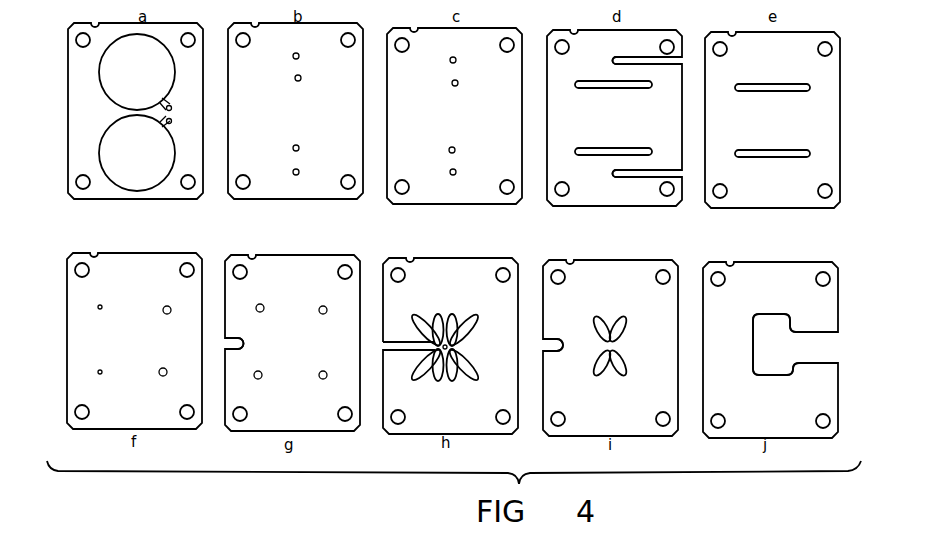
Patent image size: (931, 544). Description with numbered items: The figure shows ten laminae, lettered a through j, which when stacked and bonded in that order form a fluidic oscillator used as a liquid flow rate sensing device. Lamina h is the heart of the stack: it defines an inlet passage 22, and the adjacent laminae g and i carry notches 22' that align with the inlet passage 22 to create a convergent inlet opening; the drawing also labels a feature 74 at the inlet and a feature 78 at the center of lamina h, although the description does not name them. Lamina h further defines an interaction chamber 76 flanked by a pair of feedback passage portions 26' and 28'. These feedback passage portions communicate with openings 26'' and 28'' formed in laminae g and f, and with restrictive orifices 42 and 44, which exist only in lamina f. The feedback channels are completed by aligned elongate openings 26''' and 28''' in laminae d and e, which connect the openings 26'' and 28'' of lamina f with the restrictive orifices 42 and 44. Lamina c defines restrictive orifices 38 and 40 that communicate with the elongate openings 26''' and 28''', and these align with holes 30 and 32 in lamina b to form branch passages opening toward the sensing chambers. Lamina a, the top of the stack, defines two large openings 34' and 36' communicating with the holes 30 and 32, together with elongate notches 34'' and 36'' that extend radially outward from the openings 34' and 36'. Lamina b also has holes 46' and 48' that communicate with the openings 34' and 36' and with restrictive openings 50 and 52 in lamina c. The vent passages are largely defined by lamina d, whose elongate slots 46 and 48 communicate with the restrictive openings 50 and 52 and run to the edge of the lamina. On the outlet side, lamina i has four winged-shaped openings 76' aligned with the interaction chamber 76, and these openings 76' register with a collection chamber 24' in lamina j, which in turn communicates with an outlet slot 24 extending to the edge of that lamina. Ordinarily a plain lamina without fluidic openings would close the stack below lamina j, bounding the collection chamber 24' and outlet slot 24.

The large opening 34' is at (137, 72).
The elongate notch 34'' is at (185, 56).
The large opening 36' is at (137, 153).
The elongate notch 36'' is at (187, 170).
The hole 46' is at (279, 69).
The hole 30 is at (301, 80).
The hole 32 is at (293, 149).
The hole 48' is at (315, 162).
The restrictive opening 50 is at (450, 61).
The restrictive orifice 38 is at (458, 83).
The restrictive orifice 40 is at (449, 151).
The restrictive opening 52 is at (456, 174).
The elongate slot 46 is at (629, 50).
The elongate slot 48 is at (629, 185).
The elongate opening 26''' is at (692, 82).
The elongate opening 28''' is at (692, 139).
The restrictive orifice 42 is at (100, 305).
The restrictive orifice 44 is at (100, 375).
The opening 26'' is at (221, 304).
The opening 28'' is at (221, 376).
The notch 22' is at (388, 350).
The inlet passage 22 is at (403, 287).
The inlet slot wall 74 is at (383, 352).
The interaction chamber 76 is at (446, 303).
The feedback passage portion 26' is at (448, 317).
The feedback passage portion 28' is at (444, 378).
The lobe junction 78 is at (466, 347).
The winged-shaped openings 76' is at (611, 351).
The outlet slot 24 is at (803, 338).
The collection chamber 24' is at (792, 363).